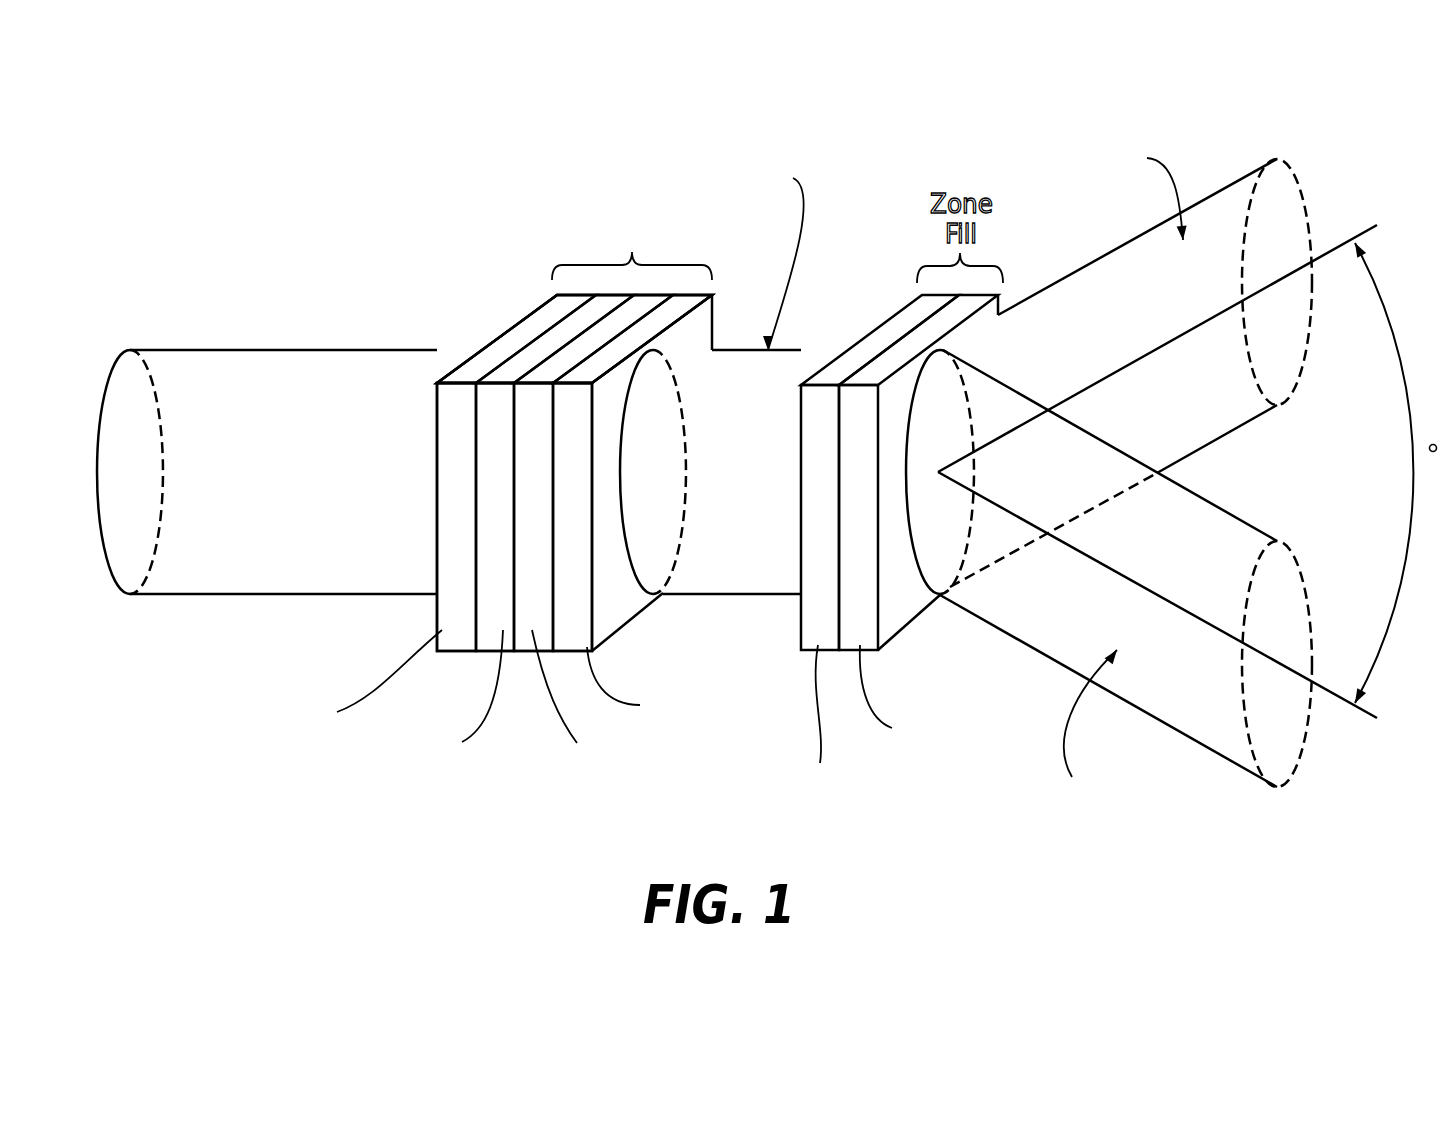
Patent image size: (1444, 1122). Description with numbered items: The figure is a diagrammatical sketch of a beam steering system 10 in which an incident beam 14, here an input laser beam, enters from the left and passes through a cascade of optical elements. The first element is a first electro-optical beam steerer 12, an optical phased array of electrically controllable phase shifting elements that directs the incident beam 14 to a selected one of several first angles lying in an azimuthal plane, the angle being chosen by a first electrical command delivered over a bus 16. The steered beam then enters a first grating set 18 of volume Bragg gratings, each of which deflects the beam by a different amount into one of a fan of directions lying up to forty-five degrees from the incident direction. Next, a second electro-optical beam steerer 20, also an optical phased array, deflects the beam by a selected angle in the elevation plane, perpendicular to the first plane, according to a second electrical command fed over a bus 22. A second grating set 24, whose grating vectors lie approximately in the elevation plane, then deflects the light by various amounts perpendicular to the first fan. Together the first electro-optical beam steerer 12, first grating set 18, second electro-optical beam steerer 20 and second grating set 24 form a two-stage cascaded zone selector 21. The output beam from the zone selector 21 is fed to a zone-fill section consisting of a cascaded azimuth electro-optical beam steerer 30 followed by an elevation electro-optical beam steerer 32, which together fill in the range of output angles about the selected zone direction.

The beam steering system 10 is at (398, 148).
The first electro-optical beam steerer 12 is at (495, 353).
The incident beam 14 is at (237, 357).
The bus 16 is at (533, 320).
The first grating set 18 is at (493, 628).
The second electro-optical beam steerer 20 is at (535, 627).
The zone selector 21 is at (574, 283).
The bus 22 is at (573, 628).
The second grating set 24 is at (712, 313).
The azimuth electro-optical beam steerer 30 is at (905, 323).
The elevation electro-optical beam steerer 32 is at (983, 292).